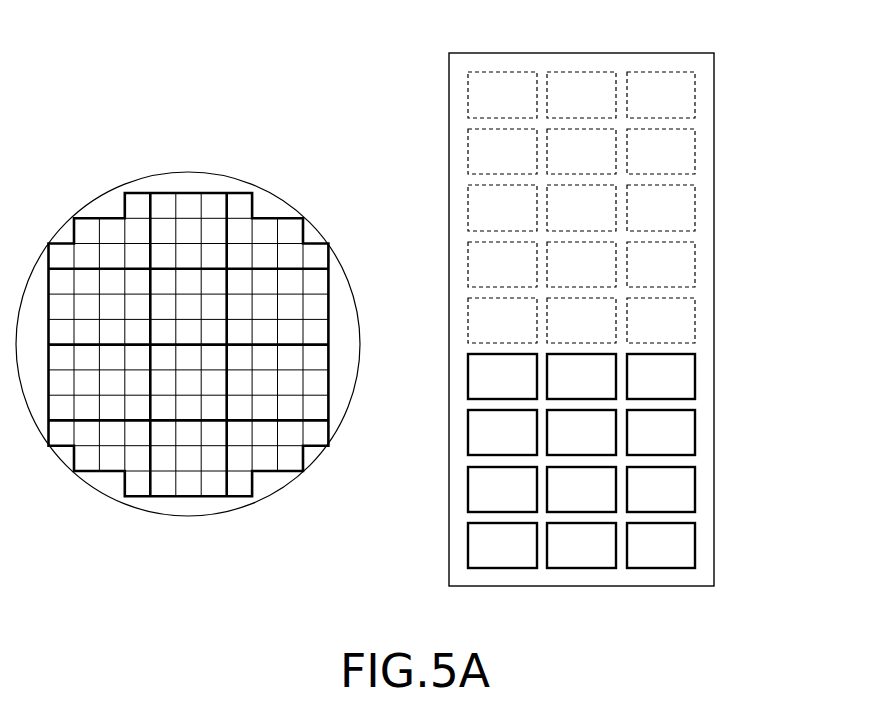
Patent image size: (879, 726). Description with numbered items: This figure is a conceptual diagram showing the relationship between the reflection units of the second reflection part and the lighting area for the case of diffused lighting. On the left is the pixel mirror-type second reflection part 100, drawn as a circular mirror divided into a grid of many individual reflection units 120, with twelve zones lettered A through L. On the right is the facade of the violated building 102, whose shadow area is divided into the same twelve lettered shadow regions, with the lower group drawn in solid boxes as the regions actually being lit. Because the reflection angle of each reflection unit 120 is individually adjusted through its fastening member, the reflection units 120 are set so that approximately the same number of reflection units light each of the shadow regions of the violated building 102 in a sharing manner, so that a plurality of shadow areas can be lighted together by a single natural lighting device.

The second reflection part 100 is at (188, 275).
The reflection units 120 is at (199, 167).
The violated building 102 is at (714, 214).